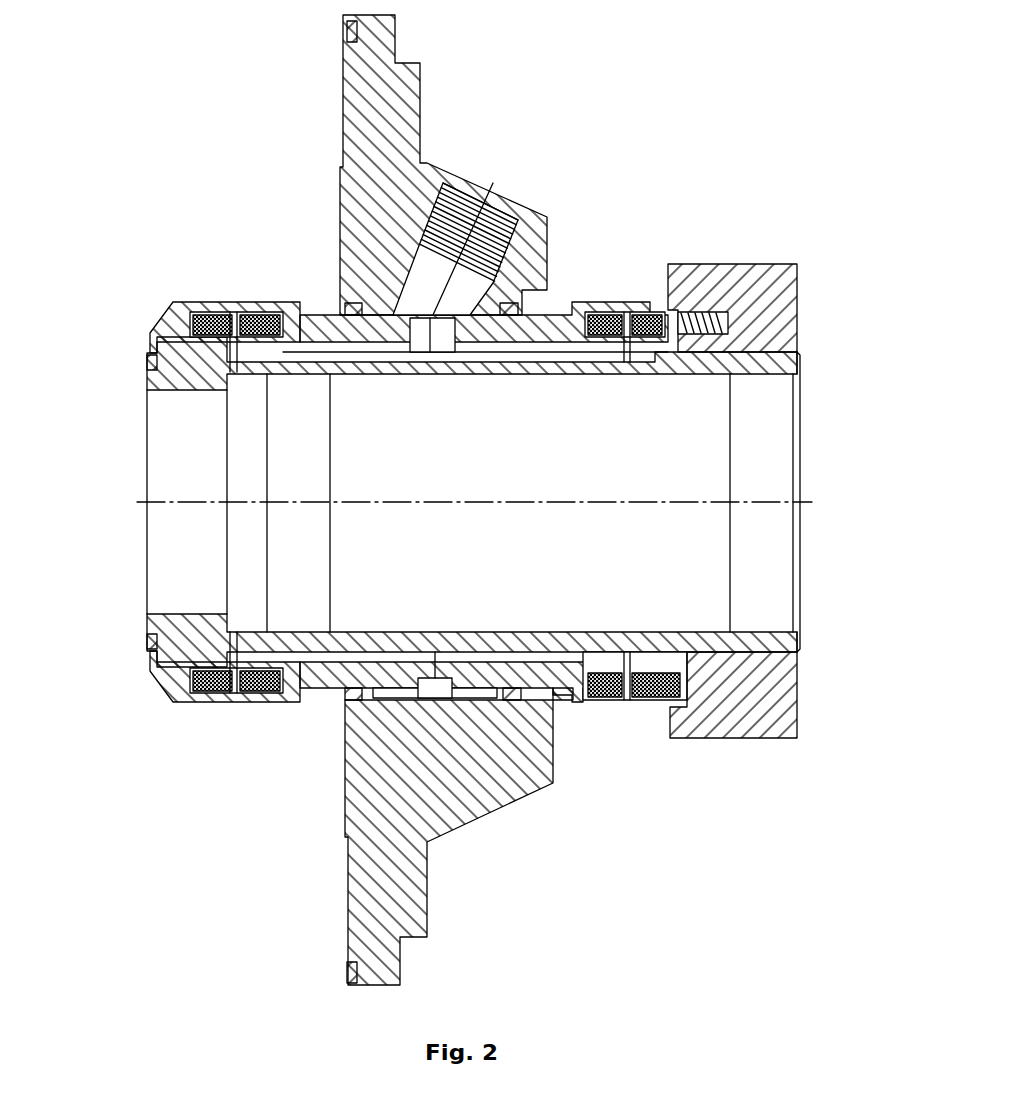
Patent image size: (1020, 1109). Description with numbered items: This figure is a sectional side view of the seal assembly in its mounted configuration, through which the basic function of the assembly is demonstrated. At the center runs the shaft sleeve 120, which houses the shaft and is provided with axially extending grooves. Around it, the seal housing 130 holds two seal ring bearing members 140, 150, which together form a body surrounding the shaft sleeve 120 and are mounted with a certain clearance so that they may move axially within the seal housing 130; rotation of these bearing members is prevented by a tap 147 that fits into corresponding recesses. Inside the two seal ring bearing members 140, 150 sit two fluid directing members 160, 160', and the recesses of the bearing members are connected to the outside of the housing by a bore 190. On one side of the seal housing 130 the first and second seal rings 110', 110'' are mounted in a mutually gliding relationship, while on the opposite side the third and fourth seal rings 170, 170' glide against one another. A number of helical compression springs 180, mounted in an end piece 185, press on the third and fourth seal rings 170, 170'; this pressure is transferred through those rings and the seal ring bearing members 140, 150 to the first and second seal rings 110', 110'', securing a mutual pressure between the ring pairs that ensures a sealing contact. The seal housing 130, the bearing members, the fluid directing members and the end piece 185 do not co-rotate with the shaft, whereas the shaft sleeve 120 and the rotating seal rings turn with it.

The shaft sleeve 120 is at (140, 378).
The seal housing 130 is at (427, 152).
The seal ring bearing member 140 is at (288, 302).
The tap 147 is at (430, 692).
The seal ring bearing member 150 is at (593, 300).
The fluid directing member 160 is at (251, 267).
The fluid directing member 160' is at (615, 283).
The third seal ring 170 is at (622, 737).
The fourth seal ring 170' is at (642, 762).
The helical compression spring 180 is at (717, 310).
The end piece 185 is at (803, 322).
The bore 190 is at (500, 203).
The first seal ring 110' is at (189, 712).
The second seal ring 110'' is at (194, 722).